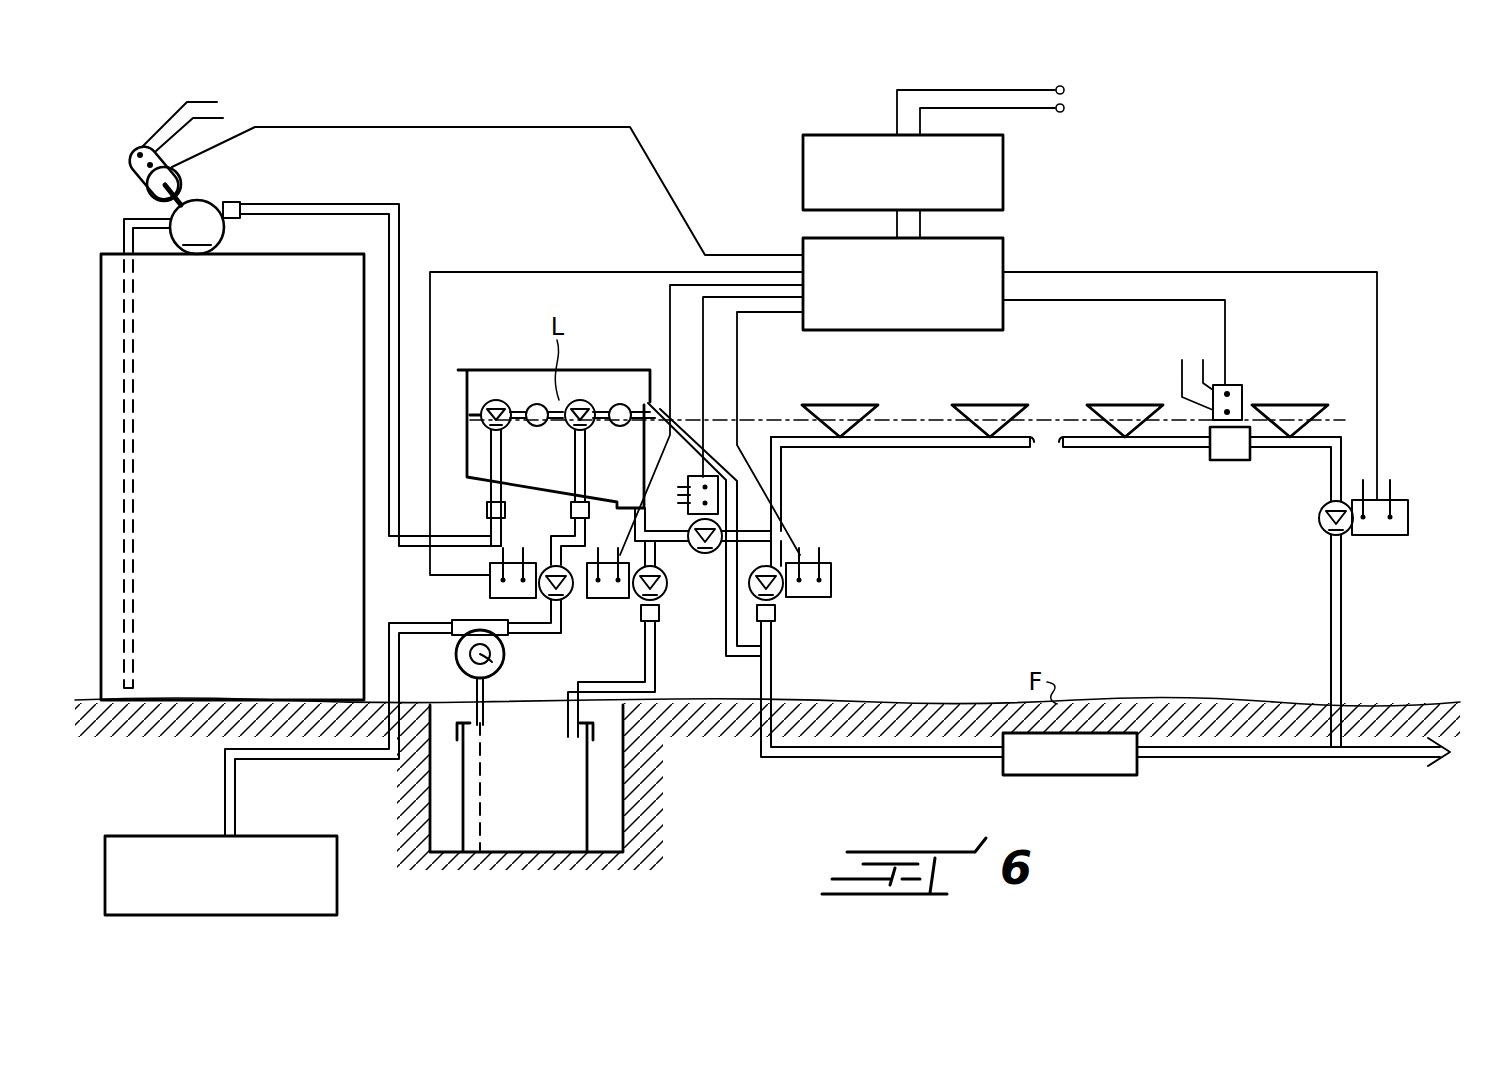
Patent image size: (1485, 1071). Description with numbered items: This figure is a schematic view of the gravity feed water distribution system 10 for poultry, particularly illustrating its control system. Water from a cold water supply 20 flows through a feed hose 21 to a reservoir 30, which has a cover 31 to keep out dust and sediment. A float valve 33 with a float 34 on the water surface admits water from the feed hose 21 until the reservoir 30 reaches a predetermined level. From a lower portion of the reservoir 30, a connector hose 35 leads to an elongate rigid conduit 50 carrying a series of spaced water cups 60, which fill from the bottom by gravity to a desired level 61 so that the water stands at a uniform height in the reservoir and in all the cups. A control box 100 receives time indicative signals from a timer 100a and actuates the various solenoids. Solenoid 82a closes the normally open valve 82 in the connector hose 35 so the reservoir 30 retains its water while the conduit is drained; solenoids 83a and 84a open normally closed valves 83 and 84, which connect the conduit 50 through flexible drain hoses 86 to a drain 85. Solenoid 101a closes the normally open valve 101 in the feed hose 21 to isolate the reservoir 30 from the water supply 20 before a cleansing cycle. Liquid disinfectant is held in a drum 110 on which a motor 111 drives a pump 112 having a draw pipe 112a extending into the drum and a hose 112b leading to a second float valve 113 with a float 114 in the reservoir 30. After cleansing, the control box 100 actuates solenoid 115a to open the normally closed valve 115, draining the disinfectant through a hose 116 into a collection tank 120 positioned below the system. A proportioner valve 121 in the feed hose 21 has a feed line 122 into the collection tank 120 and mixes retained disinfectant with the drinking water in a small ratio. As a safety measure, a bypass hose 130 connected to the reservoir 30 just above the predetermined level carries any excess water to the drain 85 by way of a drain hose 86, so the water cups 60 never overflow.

The gravity feed water distribution system 10 is at (1218, 218).
The cold water supply 20 is at (151, 836).
The feed hose 21 is at (319, 755).
The reservoir 30 is at (454, 426).
The cover 31 is at (507, 368).
The float valve 33 is at (578, 400).
The float 34 is at (620, 404).
The connector hose 35 is at (617, 513).
The conduit 50 is at (1033, 449).
The water cups 60 is at (850, 404).
The desired level 61 is at (1062, 414).
The valve 82 is at (706, 555).
The solenoid 82a is at (681, 498).
The valve 83 is at (778, 600).
The solenoid 83a is at (831, 586).
The valve 84 is at (1318, 523).
The solenoid 84a is at (1385, 536).
The drain 85 is at (1068, 776).
The drain hoses 86 is at (772, 684).
The control box 100 is at (993, 243).
The timer 100a is at (1003, 170).
The valve 101 is at (568, 602).
The solenoid 101a is at (490, 587).
The drum 110 is at (212, 491).
The motor 111 is at (132, 174).
The pump 112 is at (195, 196).
The draw pipe 112a is at (135, 420).
The hose 112b is at (409, 232).
The float valve 113 is at (495, 400).
The float 114 is at (537, 404).
The valve 115 is at (664, 606).
The solenoid 115a is at (622, 600).
The hose 116 is at (646, 660).
The collection tank 120 is at (508, 817).
The proportioner valve 121 is at (504, 662).
The feed line 122 is at (487, 778).
The bypass hose 130 is at (726, 625).